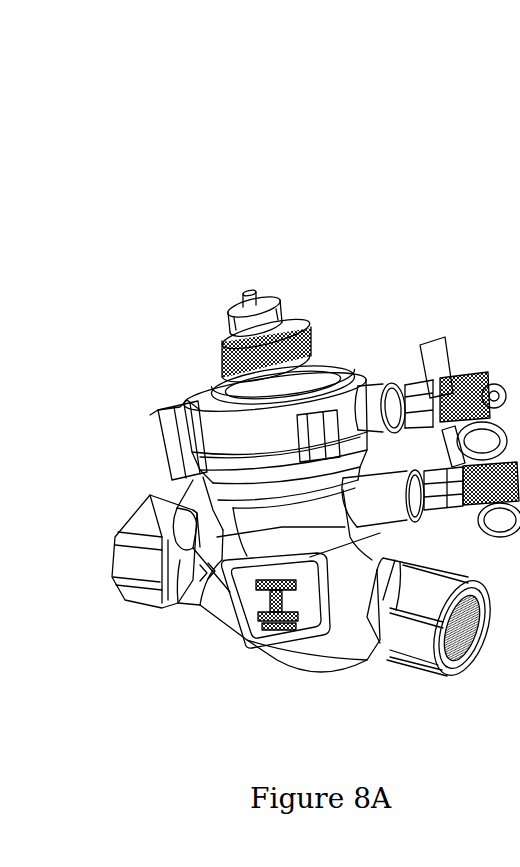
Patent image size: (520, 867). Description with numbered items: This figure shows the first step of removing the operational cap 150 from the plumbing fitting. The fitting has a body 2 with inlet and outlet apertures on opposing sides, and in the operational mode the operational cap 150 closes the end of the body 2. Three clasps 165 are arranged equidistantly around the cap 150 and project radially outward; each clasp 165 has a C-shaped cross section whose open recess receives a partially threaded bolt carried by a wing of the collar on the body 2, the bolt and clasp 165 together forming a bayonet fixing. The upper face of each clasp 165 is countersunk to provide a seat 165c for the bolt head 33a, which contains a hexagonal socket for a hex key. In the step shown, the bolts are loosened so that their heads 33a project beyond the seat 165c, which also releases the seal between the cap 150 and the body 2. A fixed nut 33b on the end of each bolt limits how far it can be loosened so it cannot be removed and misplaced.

The body 2 is at (287, 528).
The operational cap 150 is at (274, 430).
The head 33a is at (318, 385).
The fixed nut 33b is at (170, 477).
The seat 165c is at (157, 430).
The clasp 165 is at (347, 420).